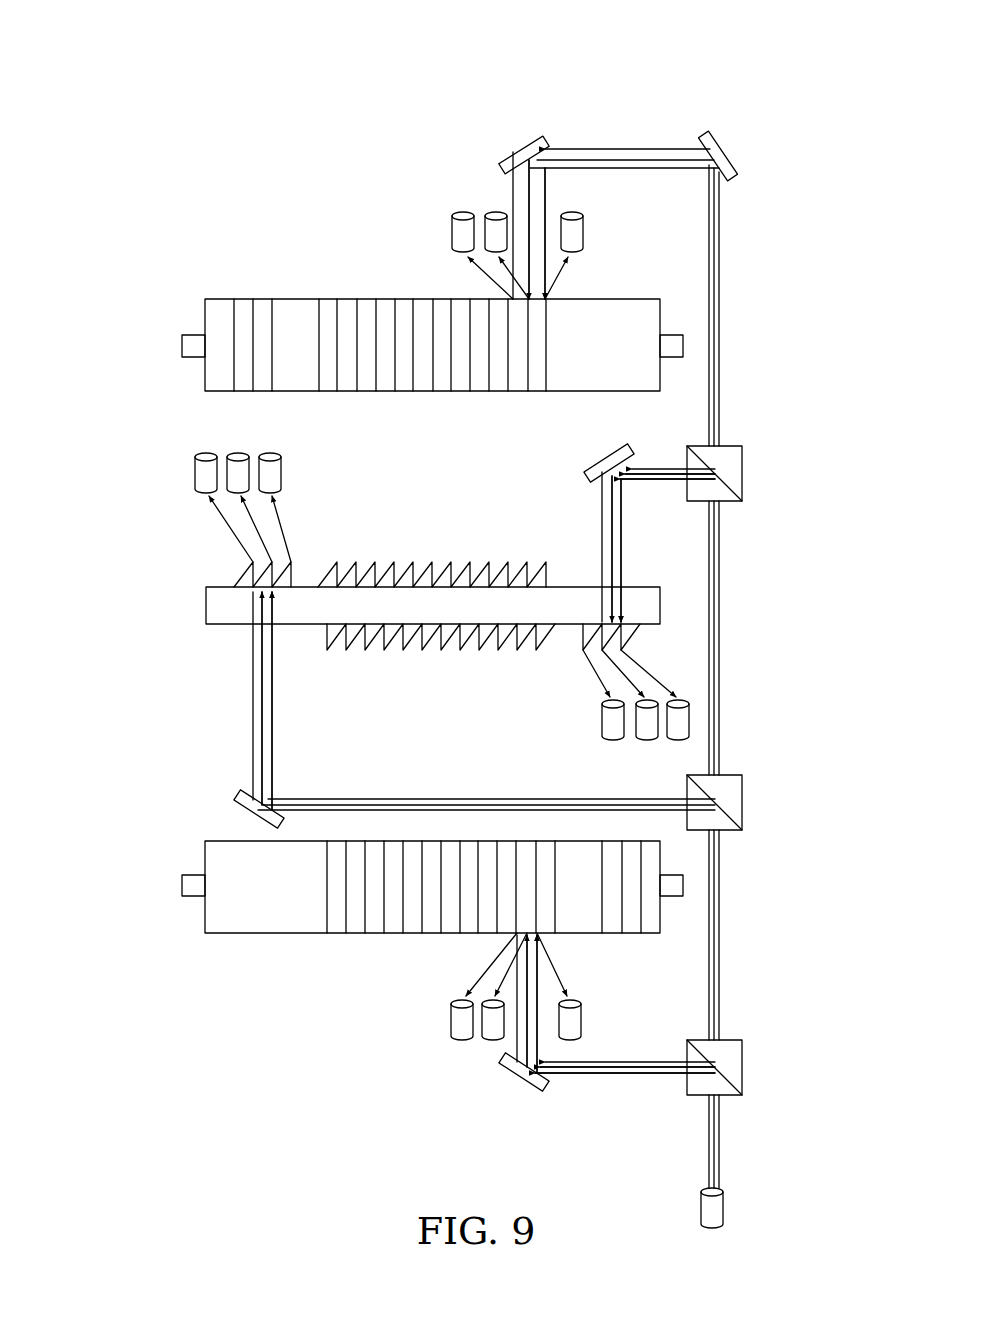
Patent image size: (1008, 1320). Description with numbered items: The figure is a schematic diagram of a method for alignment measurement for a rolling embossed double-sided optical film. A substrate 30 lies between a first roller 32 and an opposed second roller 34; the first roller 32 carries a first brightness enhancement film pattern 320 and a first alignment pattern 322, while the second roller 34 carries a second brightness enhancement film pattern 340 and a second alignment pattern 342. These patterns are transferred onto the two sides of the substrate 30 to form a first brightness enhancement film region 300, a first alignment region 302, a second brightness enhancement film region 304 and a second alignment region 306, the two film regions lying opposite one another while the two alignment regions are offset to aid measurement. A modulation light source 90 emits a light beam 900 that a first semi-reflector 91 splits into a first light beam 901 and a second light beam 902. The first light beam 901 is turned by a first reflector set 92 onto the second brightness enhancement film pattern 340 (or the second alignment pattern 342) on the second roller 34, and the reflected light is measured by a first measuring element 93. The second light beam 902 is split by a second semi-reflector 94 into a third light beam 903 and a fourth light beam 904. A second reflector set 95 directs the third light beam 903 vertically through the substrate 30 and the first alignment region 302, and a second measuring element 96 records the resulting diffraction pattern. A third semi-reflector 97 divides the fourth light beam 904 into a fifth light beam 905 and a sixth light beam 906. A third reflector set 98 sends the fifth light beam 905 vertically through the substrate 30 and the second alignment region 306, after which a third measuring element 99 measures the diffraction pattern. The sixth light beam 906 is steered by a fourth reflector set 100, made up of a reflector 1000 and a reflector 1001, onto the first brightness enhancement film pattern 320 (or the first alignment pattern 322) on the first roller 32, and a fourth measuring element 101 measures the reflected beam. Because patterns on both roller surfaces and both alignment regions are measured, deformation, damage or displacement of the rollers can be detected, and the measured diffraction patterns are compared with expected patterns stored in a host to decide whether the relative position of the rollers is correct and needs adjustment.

The fourth reflector set 100 is at (618, 102).
The reflector 1000 is at (536, 138).
The reflector 1001 is at (705, 133).
The fourth measuring element 101 is at (455, 215).
The first roller 32 is at (406, 304).
The first brightness enhancement film pattern 320 is at (385, 288).
The first alignment pattern 322 is at (245, 288).
The substrate 30 is at (395, 607).
The first brightness enhancement film region 300 is at (465, 566).
The first alignment region 302 is at (240, 576).
The second brightness enhancement film region 304 is at (410, 652).
The second alignment region 306 is at (578, 648).
The second roller 34 is at (413, 918).
The second brightness enhancement film pattern 340 is at (360, 940).
The second alignment pattern 342 is at (627, 940).
The modulation light source 90 is at (722, 1205).
The light beam 900 is at (720, 1142).
The first semi-reflector 91 is at (742, 1065).
The first light beam 901 is at (603, 1075).
The second light beam 902 is at (720, 942).
The first reflector set 92 is at (520, 1088).
The first measuring element 93 is at (455, 1005).
The second semi-reflector 94 is at (742, 800).
The third light beam 903 is at (375, 797).
The fourth light beam 904 is at (722, 605).
The second reflector set 95 is at (235, 812).
The second measuring element 96 is at (196, 462).
The third semi-reflector 97 is at (742, 472).
The fifth light beam 905 is at (672, 462).
The sixth light beam 906 is at (720, 312).
The third reflector set 98 is at (592, 466).
The third measuring element 99 is at (603, 710).